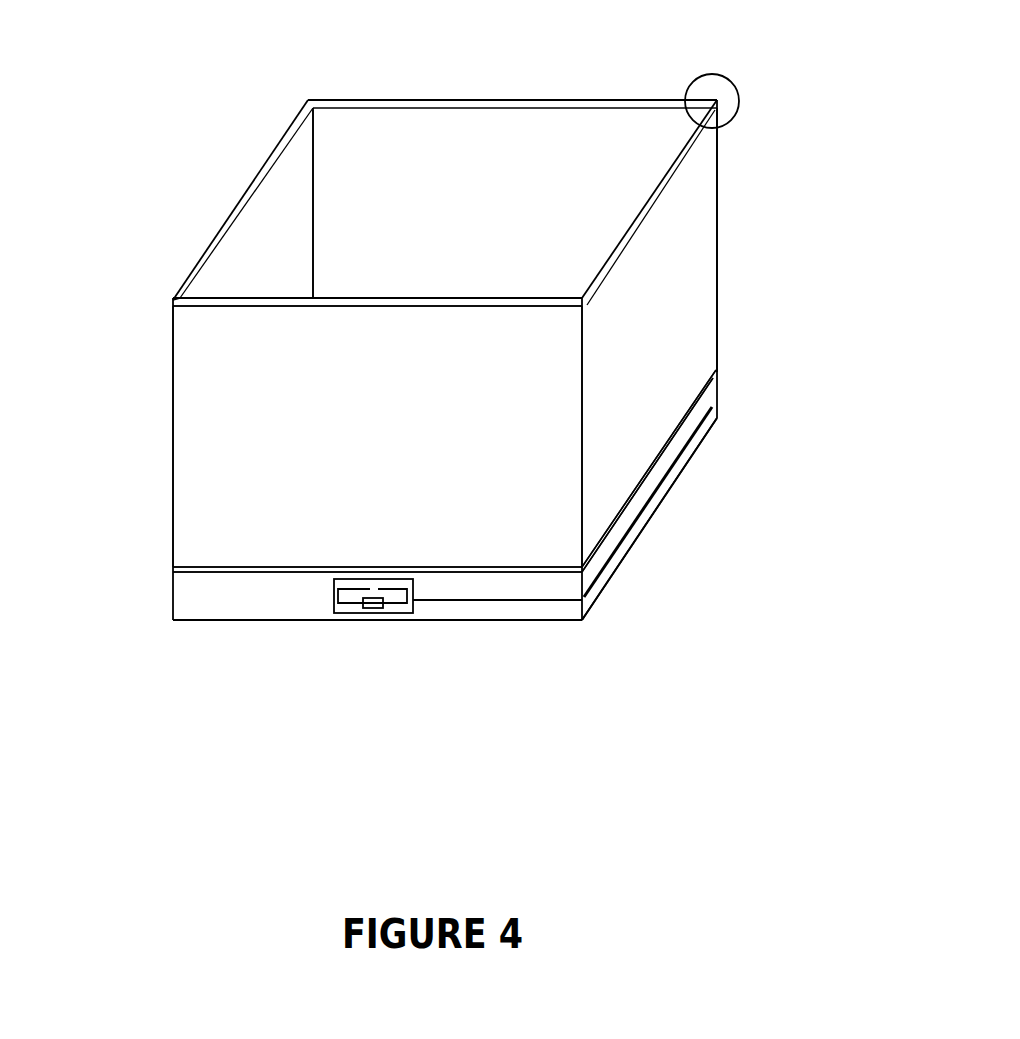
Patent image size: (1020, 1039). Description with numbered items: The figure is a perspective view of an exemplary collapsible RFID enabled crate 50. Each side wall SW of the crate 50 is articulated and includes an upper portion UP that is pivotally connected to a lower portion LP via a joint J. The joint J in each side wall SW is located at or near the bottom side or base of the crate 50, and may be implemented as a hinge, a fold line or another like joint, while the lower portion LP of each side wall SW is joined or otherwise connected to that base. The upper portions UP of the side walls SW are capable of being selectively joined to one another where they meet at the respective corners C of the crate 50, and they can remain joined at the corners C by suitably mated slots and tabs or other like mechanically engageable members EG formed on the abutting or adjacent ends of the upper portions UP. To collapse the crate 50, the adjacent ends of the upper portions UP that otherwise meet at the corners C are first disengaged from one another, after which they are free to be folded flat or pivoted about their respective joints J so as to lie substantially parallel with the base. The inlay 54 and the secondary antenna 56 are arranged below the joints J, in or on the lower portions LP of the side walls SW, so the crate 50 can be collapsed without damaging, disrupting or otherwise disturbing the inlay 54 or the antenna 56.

The crate 50 is at (148, 38).
The side wall SW is at (466, 375).
The mechanically engageable members EG is at (779, 68).
The corner C is at (443, 335).
The upper portion UP is at (475, 337).
The joint J is at (444, 449).
The lower portion LP is at (439, 492).
The antenna 56 is at (578, 554).
The inlay 54 is at (474, 726).